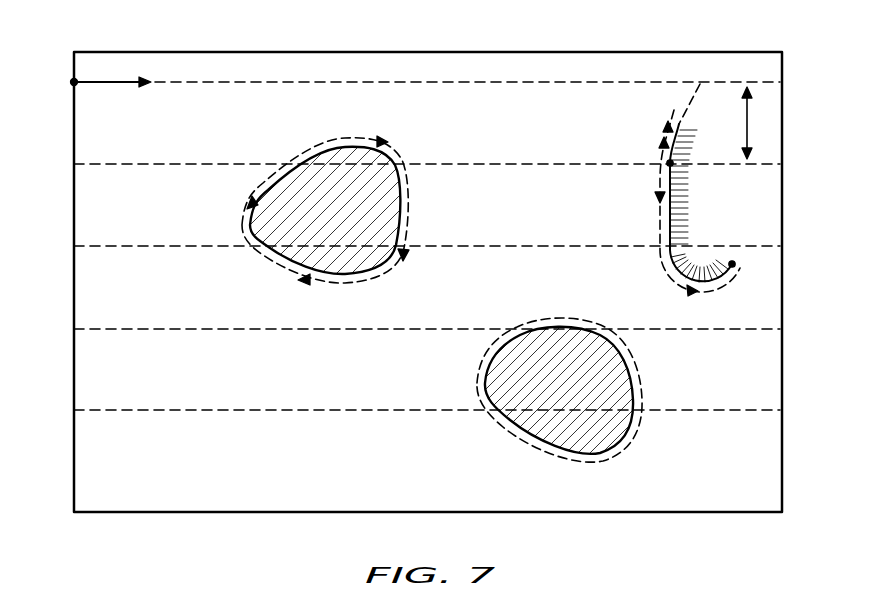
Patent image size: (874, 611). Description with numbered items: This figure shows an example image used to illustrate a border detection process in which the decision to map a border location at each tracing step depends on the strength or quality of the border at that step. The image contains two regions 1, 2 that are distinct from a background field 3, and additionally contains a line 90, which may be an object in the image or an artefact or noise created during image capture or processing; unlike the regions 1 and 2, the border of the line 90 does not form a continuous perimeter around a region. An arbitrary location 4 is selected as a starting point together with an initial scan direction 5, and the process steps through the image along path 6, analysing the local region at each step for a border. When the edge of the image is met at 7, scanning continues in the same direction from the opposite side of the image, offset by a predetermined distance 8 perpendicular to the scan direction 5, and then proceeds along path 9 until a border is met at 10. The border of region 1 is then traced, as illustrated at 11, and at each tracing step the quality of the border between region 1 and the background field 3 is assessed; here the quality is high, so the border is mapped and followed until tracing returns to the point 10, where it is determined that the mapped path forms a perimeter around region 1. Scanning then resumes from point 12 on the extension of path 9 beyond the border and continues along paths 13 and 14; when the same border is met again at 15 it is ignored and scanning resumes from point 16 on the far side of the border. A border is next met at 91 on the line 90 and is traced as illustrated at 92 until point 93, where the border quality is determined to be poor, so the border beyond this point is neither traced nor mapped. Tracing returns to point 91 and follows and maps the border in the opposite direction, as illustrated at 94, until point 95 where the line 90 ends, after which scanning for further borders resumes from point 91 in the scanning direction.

The region 1 is at (340, 157).
The region 2 is at (620, 372).
The background field 3 is at (770, 270).
The arbitrary location 4 is at (70, 82).
The initial scan direction 5 is at (113, 79).
The path 6 is at (520, 80).
The edge of the image 7 is at (784, 80).
The predetermined distance 8 is at (750, 123).
The path 9 is at (161, 162).
The point where border is first met 10 is at (292, 163).
The tracing process 11 is at (358, 283).
The resumption point 12 is at (398, 163).
The path 13 is at (559, 162).
The path 14 is at (148, 248).
The point where border is met again 15 is at (246, 246).
The resumption point 16 is at (405, 246).
The line 90 is at (709, 284).
The point where border is met 91 is at (675, 168).
The tracing direction 92 is at (664, 128).
The point of poor border quality 93 is at (683, 126).
The opposite tracing direction 94 is at (657, 199).
The end of line 95 is at (734, 262).